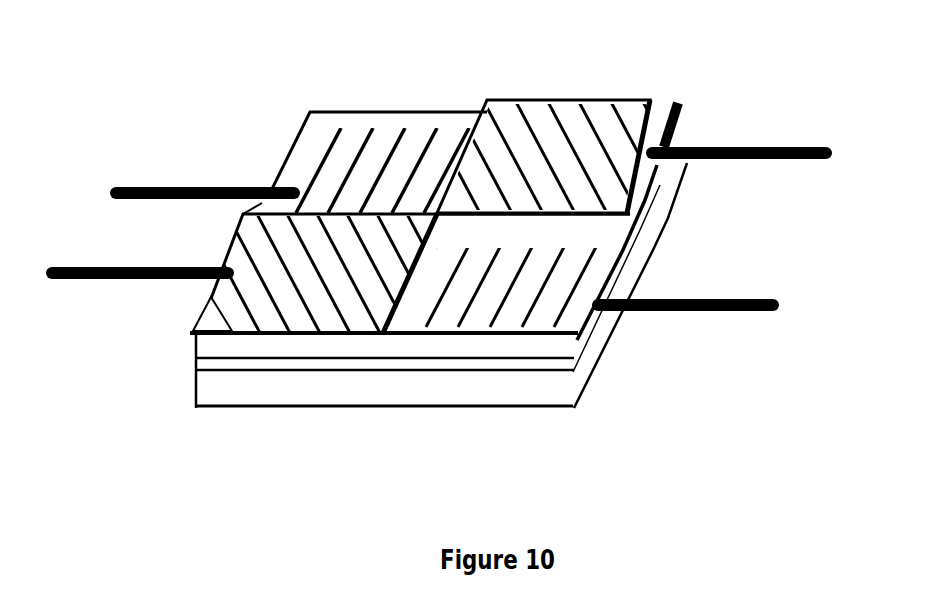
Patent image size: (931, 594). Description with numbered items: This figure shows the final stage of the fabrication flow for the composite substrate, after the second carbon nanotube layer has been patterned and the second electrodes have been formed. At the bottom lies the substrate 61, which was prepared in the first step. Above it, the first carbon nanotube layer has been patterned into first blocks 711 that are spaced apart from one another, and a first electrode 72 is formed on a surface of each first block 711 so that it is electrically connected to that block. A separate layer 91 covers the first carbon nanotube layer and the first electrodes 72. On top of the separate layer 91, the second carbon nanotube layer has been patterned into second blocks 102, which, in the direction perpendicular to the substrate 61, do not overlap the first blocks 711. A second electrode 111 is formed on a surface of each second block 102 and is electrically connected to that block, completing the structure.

The substrate 61 is at (225, 402).
The first block 711 is at (473, 363).
The separate layer 91 is at (312, 353).
The second block 102 is at (531, 118).
The second electrode 111 is at (707, 148).
The first electrode 72 is at (672, 312).